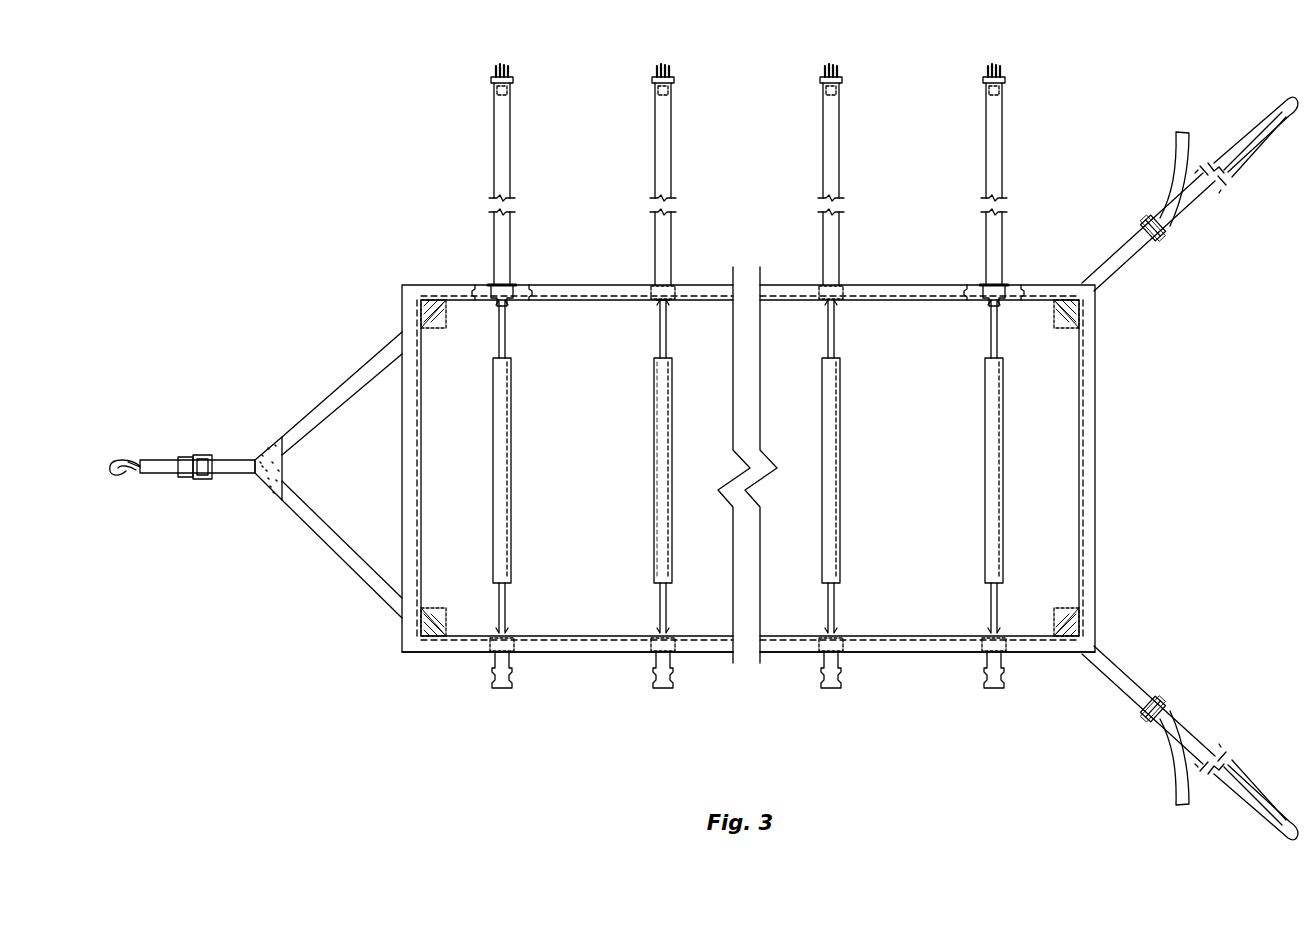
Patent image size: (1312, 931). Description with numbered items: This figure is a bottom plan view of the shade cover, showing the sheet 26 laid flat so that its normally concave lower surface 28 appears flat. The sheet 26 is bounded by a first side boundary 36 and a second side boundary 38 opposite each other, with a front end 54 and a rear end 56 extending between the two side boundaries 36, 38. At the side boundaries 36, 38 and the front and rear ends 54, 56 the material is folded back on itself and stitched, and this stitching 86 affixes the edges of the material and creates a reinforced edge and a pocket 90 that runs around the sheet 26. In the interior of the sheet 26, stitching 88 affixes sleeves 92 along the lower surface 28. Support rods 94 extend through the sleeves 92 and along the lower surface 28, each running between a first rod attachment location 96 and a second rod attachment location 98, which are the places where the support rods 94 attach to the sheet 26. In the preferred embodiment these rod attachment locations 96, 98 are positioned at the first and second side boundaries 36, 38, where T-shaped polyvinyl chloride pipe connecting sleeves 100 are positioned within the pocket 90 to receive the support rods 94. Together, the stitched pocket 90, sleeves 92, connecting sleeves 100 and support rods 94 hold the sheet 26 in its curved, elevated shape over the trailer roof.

The sheet 26 is at (568, 308).
The concave lower surface 28 is at (580, 479).
The first side boundary 36 is at (686, 286).
The second side boundary 38 is at (633, 656).
The front end 54 is at (396, 466).
The rear end 56 is at (1103, 446).
The stitching 86 is at (862, 305).
The stitching 88 is at (672, 452).
The pocket 90 is at (976, 302).
The sleeves 92 is at (657, 470).
The support rods 94 is at (672, 318).
The first rod attachment location 96 is at (655, 306).
The second rod attachment location 98 is at (653, 628).
The connecting sleeves 100 is at (512, 300).